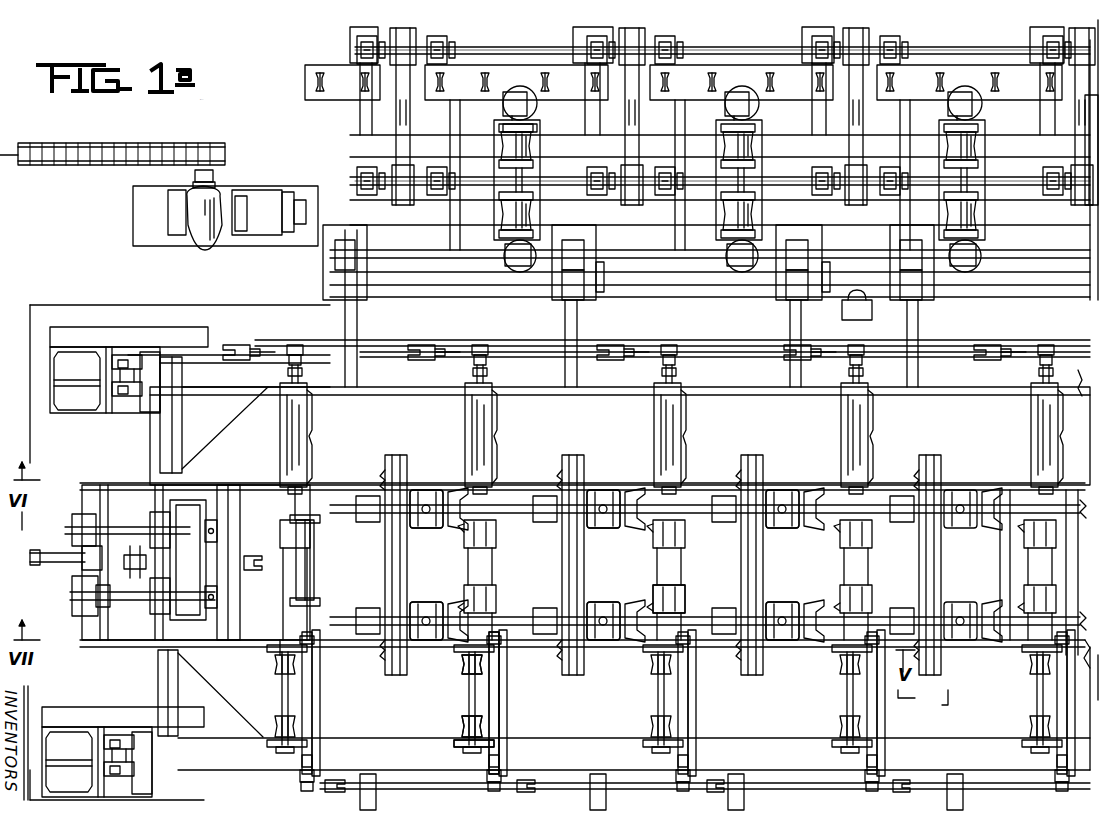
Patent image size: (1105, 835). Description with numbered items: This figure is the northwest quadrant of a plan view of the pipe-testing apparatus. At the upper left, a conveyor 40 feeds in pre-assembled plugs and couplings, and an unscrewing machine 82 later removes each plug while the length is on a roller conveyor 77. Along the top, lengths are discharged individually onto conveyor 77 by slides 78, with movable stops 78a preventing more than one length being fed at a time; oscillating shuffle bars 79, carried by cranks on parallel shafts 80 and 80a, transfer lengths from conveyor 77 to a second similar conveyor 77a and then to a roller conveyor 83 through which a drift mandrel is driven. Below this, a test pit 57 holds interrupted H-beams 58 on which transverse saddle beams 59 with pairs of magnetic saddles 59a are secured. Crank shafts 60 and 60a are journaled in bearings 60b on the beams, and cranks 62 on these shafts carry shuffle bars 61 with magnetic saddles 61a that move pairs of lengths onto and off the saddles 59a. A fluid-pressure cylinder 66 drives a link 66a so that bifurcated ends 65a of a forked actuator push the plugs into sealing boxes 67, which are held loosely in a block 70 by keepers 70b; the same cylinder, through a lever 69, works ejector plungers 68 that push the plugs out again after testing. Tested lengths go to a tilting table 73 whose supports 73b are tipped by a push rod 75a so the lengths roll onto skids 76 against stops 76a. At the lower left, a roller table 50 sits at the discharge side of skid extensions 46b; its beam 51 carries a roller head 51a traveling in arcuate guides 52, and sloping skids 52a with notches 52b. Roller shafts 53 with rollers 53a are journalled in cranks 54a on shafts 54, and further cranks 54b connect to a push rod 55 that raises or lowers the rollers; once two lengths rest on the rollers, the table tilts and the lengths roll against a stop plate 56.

The conveyor 40 is at (102, 152).
The unscrewing machine 82 is at (275, 222).
The shaft 80a is at (752, 48).
The roller conveyor 83 is at (893, 86).
The oscillating shuffle bars 79 is at (640, 120).
The shaft 80 is at (782, 178).
The second roller conveyor 77a is at (502, 140).
The roller conveyor 77 is at (504, 210).
The movable stops 78a is at (606, 274).
The slides 78 is at (562, 298).
The stops 76a is at (778, 300).
The skids 76 is at (789, 364).
The push rod 75a is at (978, 344).
The test pit 57 is at (150, 300).
The arcuate guides 52 is at (116, 396).
The roller head 51a is at (140, 395).
The stop plate 56 is at (184, 430).
The block 70 is at (218, 500).
The keepers 70b is at (190, 618).
The ejector plungers 68 is at (118, 530).
The sealing boxes 67 is at (219, 534).
The fluid-pressure cylinder 66 is at (58, 566).
The lever 69 is at (132, 576).
The link 66a is at (250, 572).
The bifurcated ends 65a is at (316, 560).
The interrupted H-beams 58 is at (342, 496).
The crank shaft 60a is at (545, 500).
The crank shaft 60 is at (542, 614).
The bearings 60b is at (808, 504).
The cranks 62 is at (606, 500).
The shuffle bars 61 is at (752, 555).
The magnetic saddles 61a is at (755, 466).
The transverse saddle beams 59 is at (680, 566).
The magnetic saddles 59a is at (690, 590).
The tilting table 73 is at (617, 390).
The supports 73b is at (687, 434).
The notches 52b is at (322, 690).
The sloping skids 52a is at (702, 702).
The roller shafts 53 is at (490, 706).
The rollers 53a is at (458, 666).
The shafts 54 is at (500, 700).
The cranks 54a is at (480, 750).
The cranks 54b is at (524, 794).
The push rod 55 is at (625, 790).
The beam 51 is at (582, 752).
The roller table 50 is at (780, 752).
The skid extensions 46b is at (360, 802).